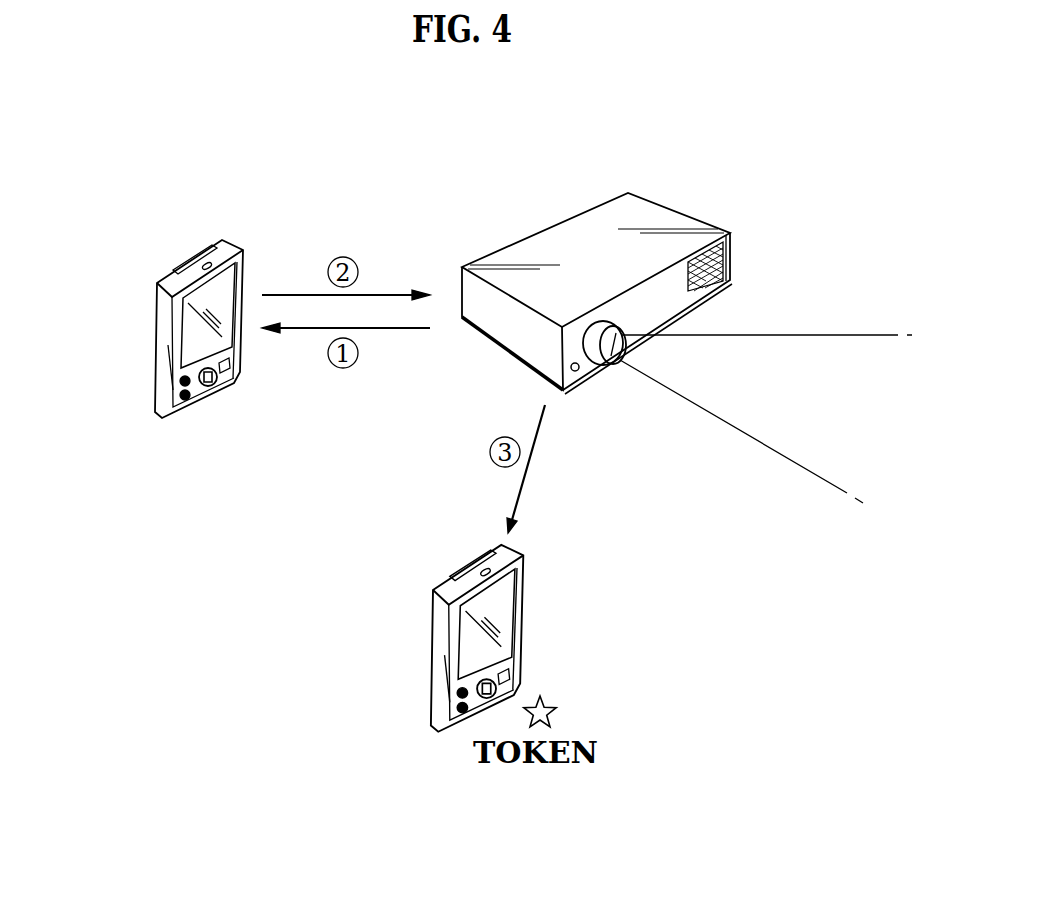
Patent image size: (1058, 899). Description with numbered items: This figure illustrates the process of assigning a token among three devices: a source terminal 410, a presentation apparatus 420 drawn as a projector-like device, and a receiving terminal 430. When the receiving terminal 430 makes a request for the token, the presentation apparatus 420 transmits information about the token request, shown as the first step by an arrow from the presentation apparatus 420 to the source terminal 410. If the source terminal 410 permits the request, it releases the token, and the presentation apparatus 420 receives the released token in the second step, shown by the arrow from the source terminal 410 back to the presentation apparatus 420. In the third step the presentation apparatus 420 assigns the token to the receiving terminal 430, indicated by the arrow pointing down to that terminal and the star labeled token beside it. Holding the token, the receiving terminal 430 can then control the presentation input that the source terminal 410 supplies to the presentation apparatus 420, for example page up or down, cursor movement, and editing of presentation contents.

The source terminal 410 is at (157, 336).
The presentation apparatus 420 is at (558, 236).
The receiving terminal 430 is at (433, 657).